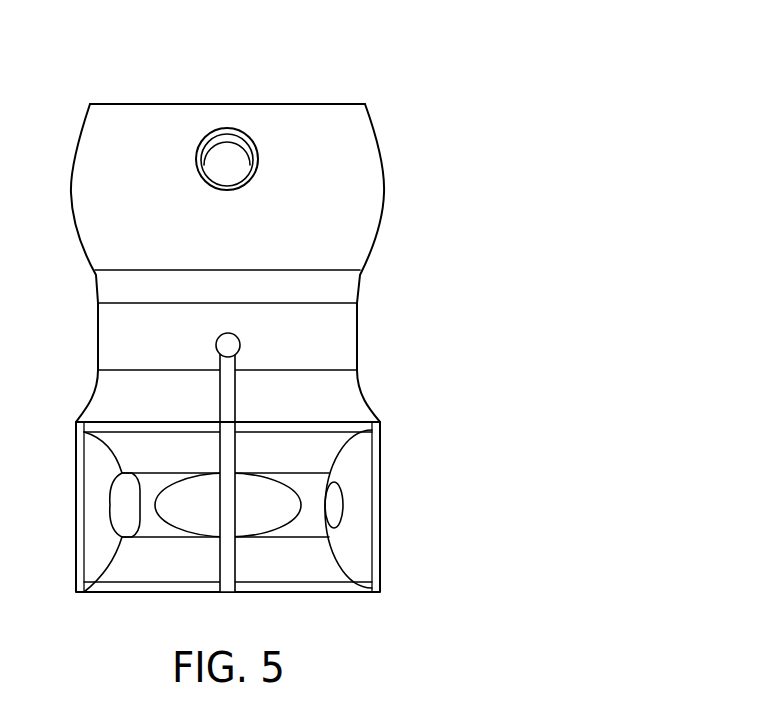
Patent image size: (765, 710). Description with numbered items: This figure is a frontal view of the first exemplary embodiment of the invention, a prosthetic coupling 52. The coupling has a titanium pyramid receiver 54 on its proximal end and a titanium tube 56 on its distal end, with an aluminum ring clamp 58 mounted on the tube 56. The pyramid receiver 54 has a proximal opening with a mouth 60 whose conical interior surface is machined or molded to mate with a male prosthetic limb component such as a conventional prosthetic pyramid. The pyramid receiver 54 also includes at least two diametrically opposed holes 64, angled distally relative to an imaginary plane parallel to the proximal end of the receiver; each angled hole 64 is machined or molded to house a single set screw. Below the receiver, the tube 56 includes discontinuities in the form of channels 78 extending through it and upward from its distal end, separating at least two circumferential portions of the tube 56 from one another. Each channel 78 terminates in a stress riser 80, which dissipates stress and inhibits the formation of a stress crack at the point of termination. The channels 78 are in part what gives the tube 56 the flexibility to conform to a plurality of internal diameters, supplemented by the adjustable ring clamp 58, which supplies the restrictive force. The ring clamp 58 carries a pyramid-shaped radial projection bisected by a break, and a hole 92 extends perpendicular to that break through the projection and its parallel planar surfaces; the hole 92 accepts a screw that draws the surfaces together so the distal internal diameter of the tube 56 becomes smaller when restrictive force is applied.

The prosthetic coupling 52 is at (305, 310).
The pyramid receiver 54 is at (387, 189).
The tube 56 is at (356, 318).
The ring clamp 58 is at (363, 465).
The mouth 60 is at (252, 101).
The angled hole 64 is at (227, 178).
The channel 78 is at (225, 386).
The stress riser 80 is at (216, 347).
The hole 92 is at (338, 504).